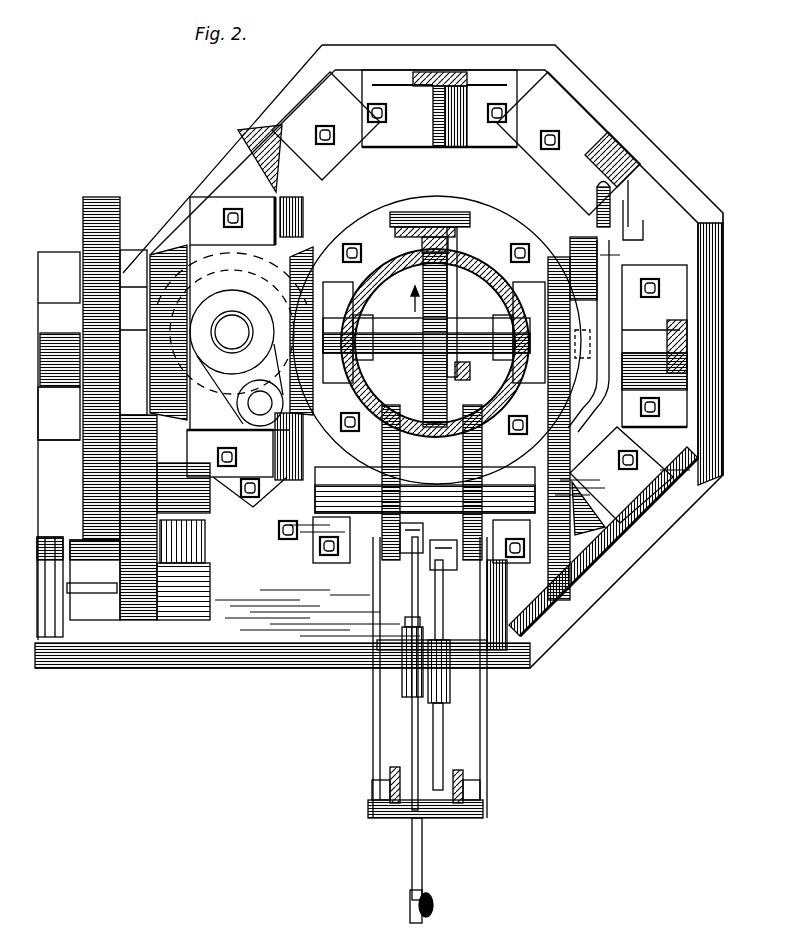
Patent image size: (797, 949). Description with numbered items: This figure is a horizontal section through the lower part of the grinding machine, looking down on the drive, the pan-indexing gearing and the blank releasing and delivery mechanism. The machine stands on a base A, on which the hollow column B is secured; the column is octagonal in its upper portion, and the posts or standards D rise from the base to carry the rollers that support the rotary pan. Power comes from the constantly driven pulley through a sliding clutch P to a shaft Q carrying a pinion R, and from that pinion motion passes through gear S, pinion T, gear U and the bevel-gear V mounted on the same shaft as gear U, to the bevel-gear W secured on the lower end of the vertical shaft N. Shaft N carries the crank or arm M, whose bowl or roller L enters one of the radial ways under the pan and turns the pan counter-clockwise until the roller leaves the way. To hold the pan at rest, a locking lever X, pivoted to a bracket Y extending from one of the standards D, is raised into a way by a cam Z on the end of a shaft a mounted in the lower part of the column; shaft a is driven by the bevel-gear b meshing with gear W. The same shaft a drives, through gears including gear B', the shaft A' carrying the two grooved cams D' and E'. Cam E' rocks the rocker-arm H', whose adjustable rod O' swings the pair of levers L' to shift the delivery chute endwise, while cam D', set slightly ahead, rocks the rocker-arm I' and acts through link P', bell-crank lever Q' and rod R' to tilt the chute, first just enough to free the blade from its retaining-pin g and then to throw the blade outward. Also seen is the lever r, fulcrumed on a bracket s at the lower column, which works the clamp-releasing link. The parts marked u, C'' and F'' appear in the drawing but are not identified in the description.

The base A is at (394, 356).
The posts or standards D is at (469, 303).
The locking lever X is at (600, 318).
The cam Z is at (597, 318).
The bracket Y is at (620, 203).
The gear B' is at (568, 412).
The hollow column B is at (437, 340).
The shaft a is at (472, 332).
The arm or lever r is at (415, 277).
The pinion column u is at (433, 360).
The retaining-pin g is at (470, 374).
The bracket s is at (432, 222).
The cam D' is at (409, 482).
The cam E' is at (485, 482).
The rocker-arm I' is at (428, 523).
The frame F'' is at (443, 677).
The arms or levers L' is at (415, 783).
The link P' is at (380, 673).
The rocker-arm H' is at (447, 631).
The adjustable link or rod O' is at (477, 746).
The cylinder C'' is at (510, 605).
The bell-crank lever Q' is at (432, 859).
The rod R' is at (434, 898).
The bevel-gear V is at (167, 252).
The bevel-gear W is at (307, 232).
The bevel-gear b is at (313, 262).
The shaft N is at (232, 332).
The crank or arm M is at (248, 352).
The bowl or roller L is at (240, 403).
The shaft A' is at (297, 446).
The gear U is at (97, 383).
The pinion R is at (138, 558).
The pinion T is at (103, 500).
The gear S is at (135, 487).
The sliding clutch P is at (59, 587).
The shaft Q is at (92, 612).